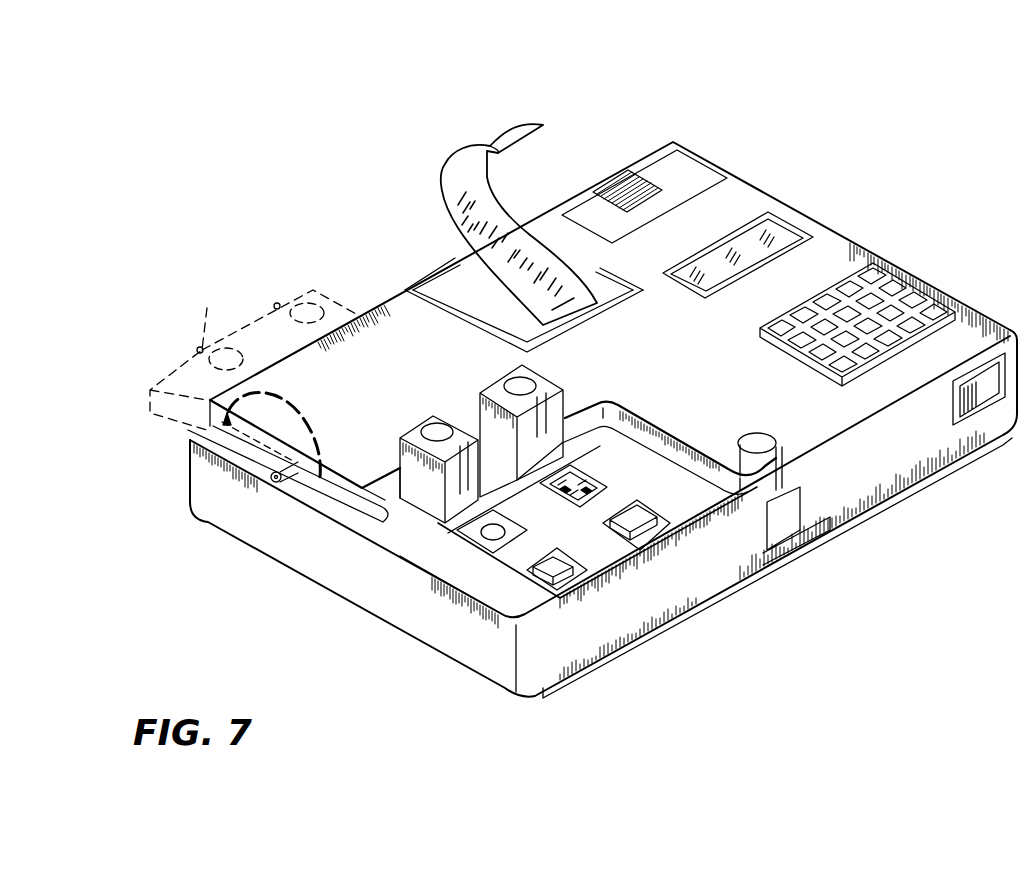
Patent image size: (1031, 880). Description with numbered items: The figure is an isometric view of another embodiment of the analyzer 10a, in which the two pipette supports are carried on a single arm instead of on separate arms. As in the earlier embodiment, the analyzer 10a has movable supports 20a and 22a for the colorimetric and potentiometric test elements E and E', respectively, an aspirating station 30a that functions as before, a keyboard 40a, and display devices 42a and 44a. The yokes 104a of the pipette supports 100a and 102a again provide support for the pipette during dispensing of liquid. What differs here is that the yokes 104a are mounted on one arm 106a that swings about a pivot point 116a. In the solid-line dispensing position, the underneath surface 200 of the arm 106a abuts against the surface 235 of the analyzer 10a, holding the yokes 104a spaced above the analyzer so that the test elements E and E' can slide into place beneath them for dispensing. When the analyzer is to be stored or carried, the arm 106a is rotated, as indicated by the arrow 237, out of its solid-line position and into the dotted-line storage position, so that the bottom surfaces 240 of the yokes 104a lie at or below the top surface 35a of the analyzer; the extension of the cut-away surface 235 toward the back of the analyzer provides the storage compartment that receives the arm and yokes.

The analyzer 10a is at (857, 180).
The movable support 20a is at (563, 586).
The movable support 22a is at (643, 536).
The aspirating station 30a is at (803, 408).
The top surface 35a is at (723, 180).
The keyboard 40a is at (920, 302).
The display device 42a is at (776, 243).
The display device 44a is at (601, 295).
The pipette support 100a is at (447, 395).
The pipette support 102a is at (555, 378).
The yoke 104a is at (414, 470).
The arm 106a is at (318, 503).
The pivot point 116a is at (272, 480).
The underneath surface 200 is at (390, 543).
The surface 235 is at (435, 568).
The arrow 237 is at (284, 403).
The bottom surfaces 240 is at (277, 306).
The test element E is at (494, 527).
The test element E' is at (582, 477).